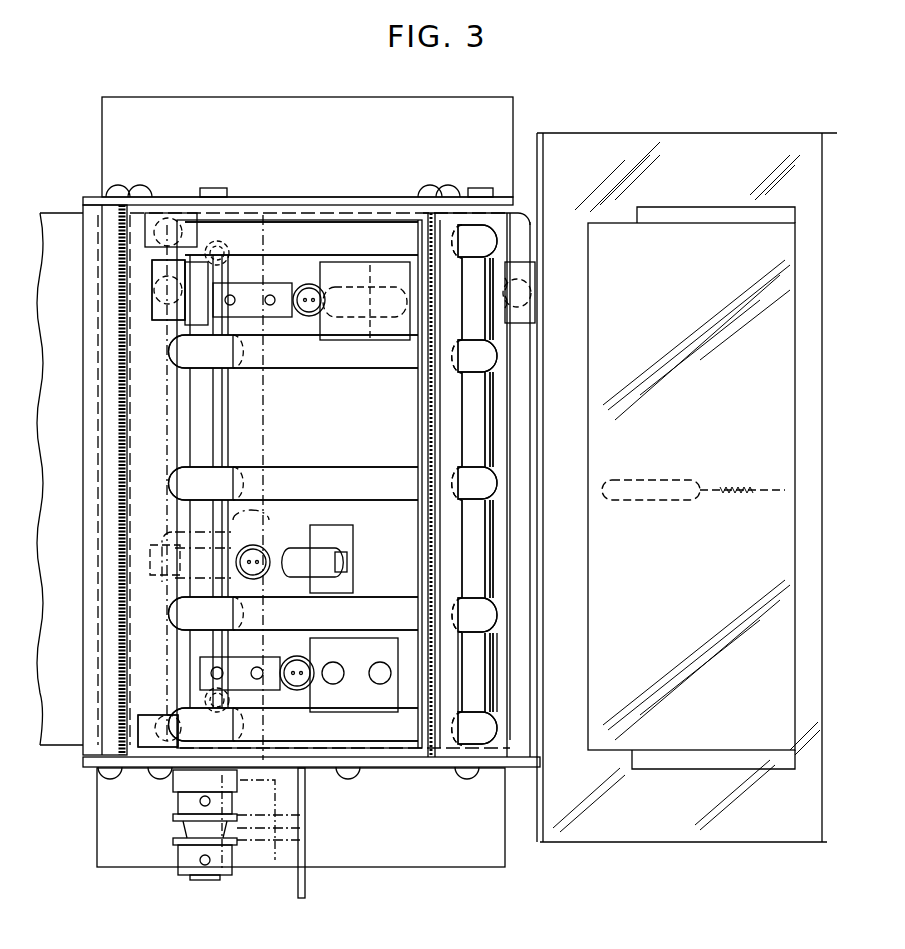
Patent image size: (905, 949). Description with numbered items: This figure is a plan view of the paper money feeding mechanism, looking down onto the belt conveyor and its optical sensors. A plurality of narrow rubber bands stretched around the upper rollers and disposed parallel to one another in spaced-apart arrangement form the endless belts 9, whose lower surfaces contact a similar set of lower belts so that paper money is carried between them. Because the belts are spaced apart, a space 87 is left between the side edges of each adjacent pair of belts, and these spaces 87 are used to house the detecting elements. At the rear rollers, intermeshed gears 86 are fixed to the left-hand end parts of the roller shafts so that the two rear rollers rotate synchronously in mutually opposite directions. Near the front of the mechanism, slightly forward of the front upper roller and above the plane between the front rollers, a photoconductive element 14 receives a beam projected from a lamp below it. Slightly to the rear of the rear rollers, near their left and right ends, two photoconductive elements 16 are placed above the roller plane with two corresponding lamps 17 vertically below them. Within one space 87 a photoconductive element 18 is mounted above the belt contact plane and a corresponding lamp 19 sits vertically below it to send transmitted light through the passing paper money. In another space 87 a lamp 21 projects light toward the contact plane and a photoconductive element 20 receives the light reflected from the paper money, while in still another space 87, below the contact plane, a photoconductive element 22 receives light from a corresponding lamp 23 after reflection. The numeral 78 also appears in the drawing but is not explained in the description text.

The endless belts 9 is at (277, 472).
The photoconductive element 14 is at (528, 297).
The photoconductive elements 16 is at (165, 300).
The lamps 17 is at (162, 718).
The photoconductive element 18 is at (298, 690).
The lamp 19 is at (298, 699).
The photoconductive element 20 is at (308, 286).
The lamp 21 is at (350, 290).
The photoconductive element 22 is at (262, 556).
The lamp 23 is at (300, 548).
The roller 78 is at (455, 690).
The intermeshed gears 86 is at (175, 784).
The space 87 is at (543, 655).